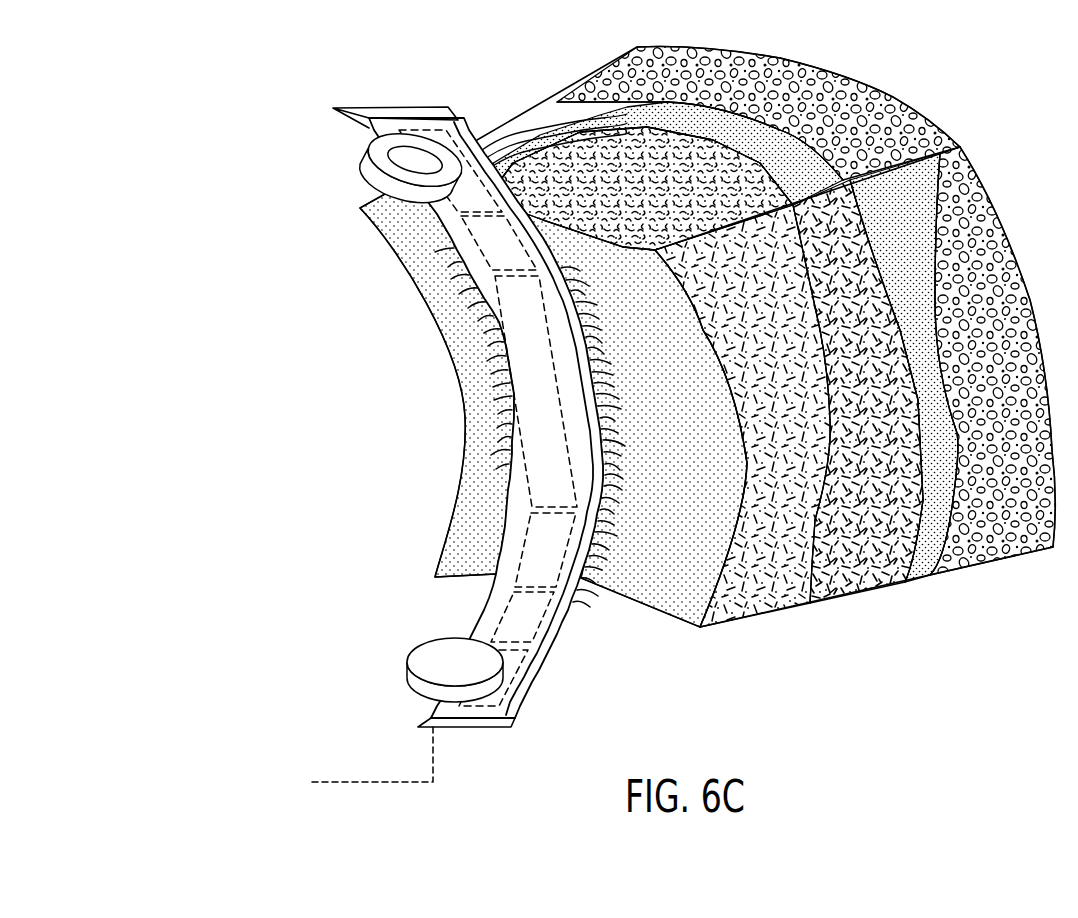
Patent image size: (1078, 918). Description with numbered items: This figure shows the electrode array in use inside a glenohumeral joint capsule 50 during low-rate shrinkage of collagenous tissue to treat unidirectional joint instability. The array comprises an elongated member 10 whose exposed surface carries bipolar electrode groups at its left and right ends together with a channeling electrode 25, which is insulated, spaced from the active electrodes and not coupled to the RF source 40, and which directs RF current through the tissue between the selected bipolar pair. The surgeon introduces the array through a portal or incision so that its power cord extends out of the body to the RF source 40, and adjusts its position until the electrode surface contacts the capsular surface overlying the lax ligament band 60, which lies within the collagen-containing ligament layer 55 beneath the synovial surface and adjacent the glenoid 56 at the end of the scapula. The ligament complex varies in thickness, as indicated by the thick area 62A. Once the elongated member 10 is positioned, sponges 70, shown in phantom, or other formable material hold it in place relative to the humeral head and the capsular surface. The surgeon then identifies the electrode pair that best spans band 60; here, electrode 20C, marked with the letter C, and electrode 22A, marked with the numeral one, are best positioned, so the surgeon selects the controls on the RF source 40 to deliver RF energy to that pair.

The elongated member 10 is at (439, 417).
The sponges 70 is at (387, 181).
The electrode 22A is at (453, 231).
The glenohumeral joint capsule 50 is at (410, 265).
The channeling electrode 25 is at (547, 481).
The electrode 20C is at (517, 567).
The RF source 40 is at (255, 773).
The band 60 is at (613, 562).
The collagen-containing ligament layer 55 is at (817, 591).
The glenoid 56 is at (607, 73).
The thick area 62A is at (727, 162).